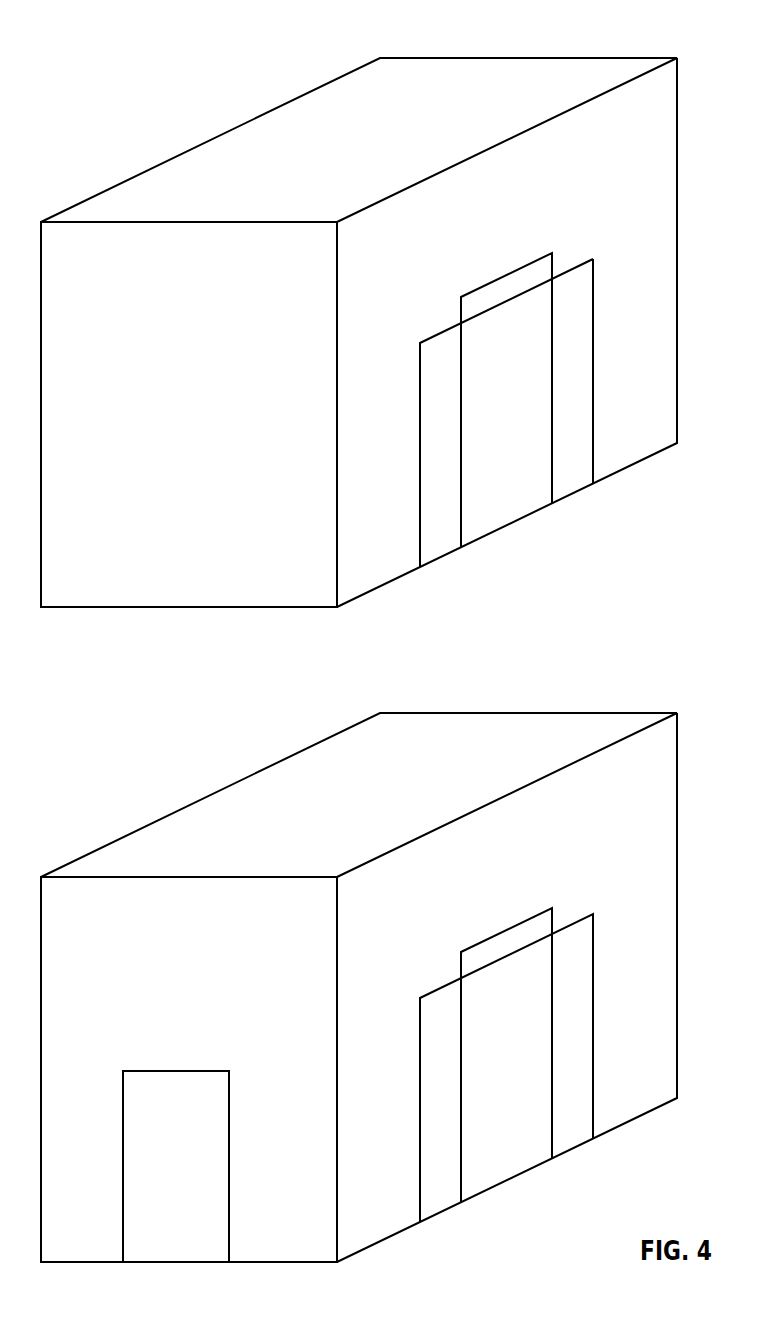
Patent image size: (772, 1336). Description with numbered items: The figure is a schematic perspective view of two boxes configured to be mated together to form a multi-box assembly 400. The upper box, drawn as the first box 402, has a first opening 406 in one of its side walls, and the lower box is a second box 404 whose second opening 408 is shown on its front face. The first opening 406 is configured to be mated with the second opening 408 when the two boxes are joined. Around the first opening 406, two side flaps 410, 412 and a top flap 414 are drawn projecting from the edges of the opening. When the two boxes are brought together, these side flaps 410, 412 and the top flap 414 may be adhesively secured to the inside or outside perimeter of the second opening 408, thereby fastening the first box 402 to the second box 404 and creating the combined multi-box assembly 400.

The multi-box assembly 400 is at (648, 39).
The first module 402 is at (203, 165).
The second box 404 is at (290, 785).
The first opening 406 is at (529, 420).
The second opening 408 is at (195, 1179).
The side flap 410 is at (440, 353).
The side flap 412 is at (568, 283).
The top flap 414 is at (496, 288).